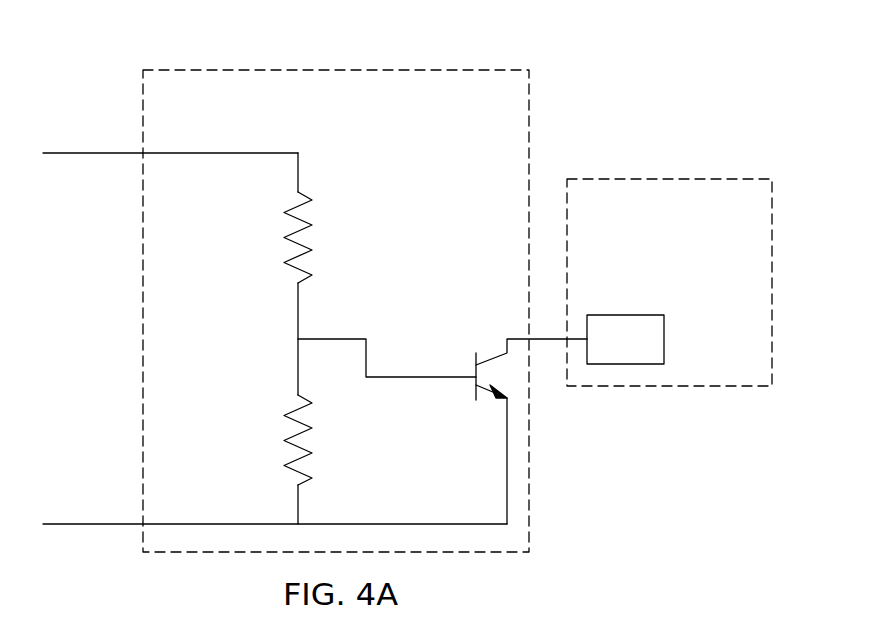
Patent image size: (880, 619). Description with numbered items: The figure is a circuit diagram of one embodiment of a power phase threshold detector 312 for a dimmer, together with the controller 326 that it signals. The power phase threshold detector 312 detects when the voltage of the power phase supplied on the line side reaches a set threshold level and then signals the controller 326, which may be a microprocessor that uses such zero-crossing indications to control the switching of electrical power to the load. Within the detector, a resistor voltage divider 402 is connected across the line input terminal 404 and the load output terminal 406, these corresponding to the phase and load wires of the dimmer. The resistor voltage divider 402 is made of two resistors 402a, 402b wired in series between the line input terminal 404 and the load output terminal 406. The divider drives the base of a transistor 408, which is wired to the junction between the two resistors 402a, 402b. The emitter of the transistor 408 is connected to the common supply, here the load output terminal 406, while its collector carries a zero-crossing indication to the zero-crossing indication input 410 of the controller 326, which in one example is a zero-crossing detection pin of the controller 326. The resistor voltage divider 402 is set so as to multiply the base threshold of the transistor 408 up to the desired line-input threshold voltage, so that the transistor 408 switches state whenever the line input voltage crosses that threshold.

The power phase threshold detector 312 is at (478, 70).
The controller 326 is at (666, 179).
The resistor voltage divider 402 is at (330, 338).
The resistor 402a is at (297, 253).
The resistor 402b is at (295, 433).
The line input terminal 404 is at (192, 153).
The load output terminal 406 is at (193, 524).
The transistor 408 is at (488, 352).
The zero-crossing indication input 410 is at (664, 338).